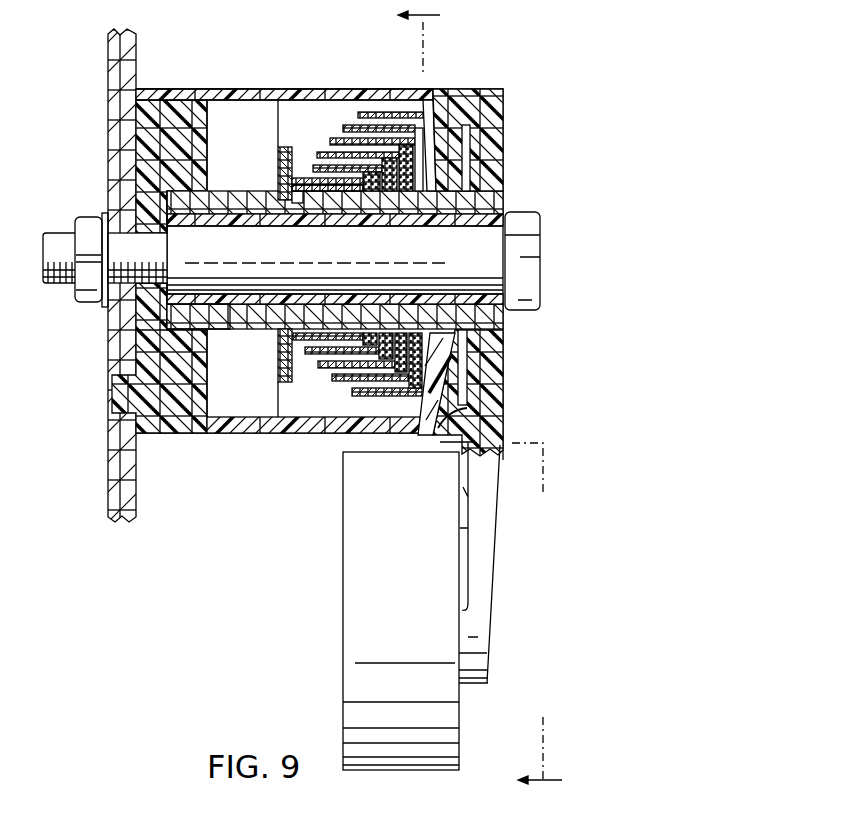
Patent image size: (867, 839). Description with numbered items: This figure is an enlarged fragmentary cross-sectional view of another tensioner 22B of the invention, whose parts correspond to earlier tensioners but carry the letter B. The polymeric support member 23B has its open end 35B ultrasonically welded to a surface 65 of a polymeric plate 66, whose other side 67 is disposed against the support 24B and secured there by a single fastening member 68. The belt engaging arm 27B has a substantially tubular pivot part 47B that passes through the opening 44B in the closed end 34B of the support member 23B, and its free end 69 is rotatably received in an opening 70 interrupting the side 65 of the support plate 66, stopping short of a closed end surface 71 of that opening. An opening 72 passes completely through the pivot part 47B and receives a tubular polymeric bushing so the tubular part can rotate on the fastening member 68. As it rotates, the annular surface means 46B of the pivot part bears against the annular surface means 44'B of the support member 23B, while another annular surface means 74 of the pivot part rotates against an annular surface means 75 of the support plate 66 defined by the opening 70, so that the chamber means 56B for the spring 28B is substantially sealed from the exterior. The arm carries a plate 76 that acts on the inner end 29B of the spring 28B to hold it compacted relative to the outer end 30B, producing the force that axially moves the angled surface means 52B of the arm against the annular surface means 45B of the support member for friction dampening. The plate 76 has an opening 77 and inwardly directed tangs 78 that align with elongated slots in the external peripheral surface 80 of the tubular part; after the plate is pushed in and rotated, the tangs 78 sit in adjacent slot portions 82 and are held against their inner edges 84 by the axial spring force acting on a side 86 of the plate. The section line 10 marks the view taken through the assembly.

The section line 10- 10 is at (470, 399).
The tensioner 22B is at (522, 88).
The support member 23B is at (298, 89).
The support 24B is at (107, 60).
The belt engaging arm 27B is at (490, 387).
The spring 28B is at (343, 394).
The inner end 29B is at (290, 383).
The outer end 30B is at (393, 113).
The closed end 34B is at (463, 138).
The open end 35B is at (218, 92).
The opening 44B is at (462, 200).
The annular surface means 44'B is at (375, 321).
The annular surface means 45B is at (460, 426).
The annular surface means 46B is at (466, 352).
The pivot part 47B is at (470, 162).
The angled surface means 52B is at (430, 425).
The chamber means 56B is at (357, 108).
The surface 65 is at (209, 387).
The polymeric plate 66 is at (182, 420).
The other side 67 is at (140, 135).
The fastening member 68 is at (482, 250).
The free end 69 is at (170, 205).
The opening 70 is at (173, 187).
The closed end surface 71 is at (202, 330).
The opening 72 is at (213, 222).
The annular surface means 74 is at (187, 328).
The annular surface means 75 is at (140, 327).
The plate 76 is at (284, 147).
The opening 77 is at (297, 333).
The tangs 78 is at (292, 200).
The external peripheral surface 80 is at (267, 330).
The slot portions 82 is at (335, 259).
The inner edges 84 is at (280, 198).
The side 86 is at (323, 116).